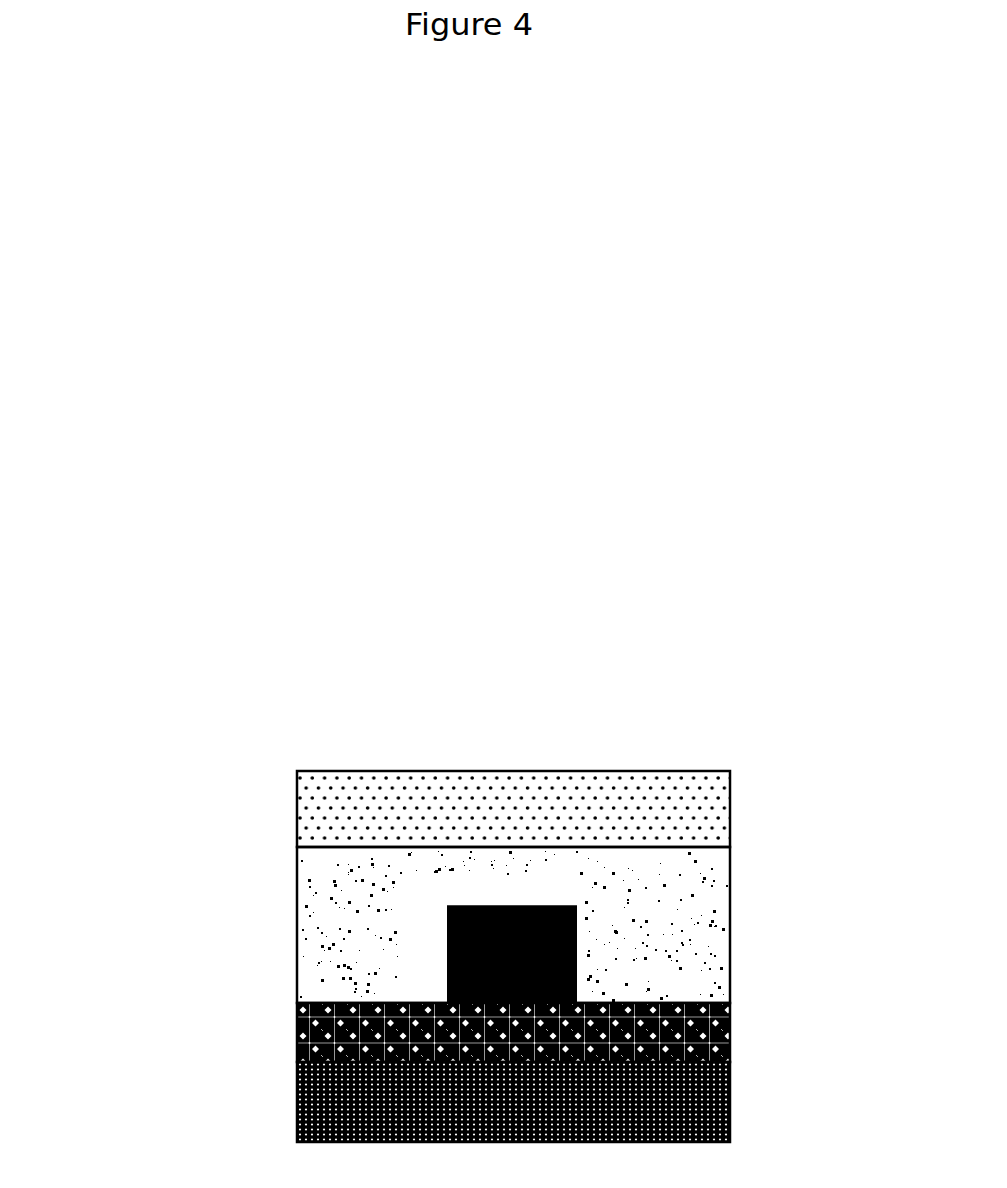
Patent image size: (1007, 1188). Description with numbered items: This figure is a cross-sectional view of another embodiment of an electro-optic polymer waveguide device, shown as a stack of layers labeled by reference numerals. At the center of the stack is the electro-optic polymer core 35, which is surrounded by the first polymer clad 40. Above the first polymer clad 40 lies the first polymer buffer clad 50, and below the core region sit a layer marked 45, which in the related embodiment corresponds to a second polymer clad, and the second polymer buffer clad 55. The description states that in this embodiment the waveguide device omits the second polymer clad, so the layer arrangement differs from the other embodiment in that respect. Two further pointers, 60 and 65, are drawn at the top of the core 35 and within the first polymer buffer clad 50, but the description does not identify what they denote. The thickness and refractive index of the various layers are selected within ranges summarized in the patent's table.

The electro-optic polymer core 35 is at (600, 955).
The first polymer clad 40 is at (270, 927).
The second polymer clad 45 is at (270, 1032).
The first polymer buffer clad 50 is at (270, 810).
The second polymer buffer clad 55 is at (270, 1103).
The pad surface / interface 60 is at (508, 893).
The passivation layer 65 is at (517, 818).